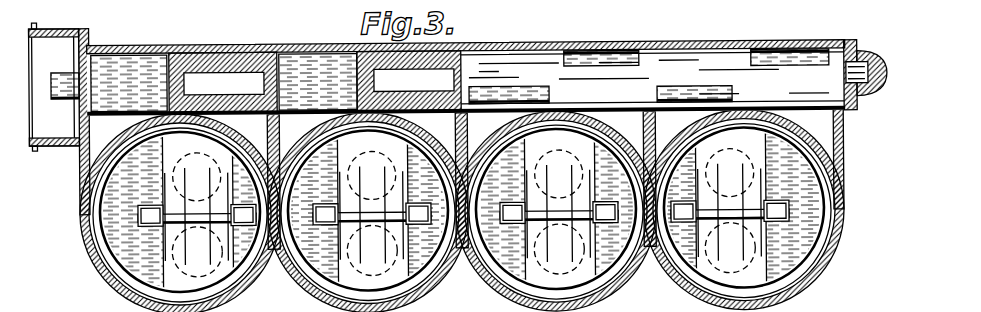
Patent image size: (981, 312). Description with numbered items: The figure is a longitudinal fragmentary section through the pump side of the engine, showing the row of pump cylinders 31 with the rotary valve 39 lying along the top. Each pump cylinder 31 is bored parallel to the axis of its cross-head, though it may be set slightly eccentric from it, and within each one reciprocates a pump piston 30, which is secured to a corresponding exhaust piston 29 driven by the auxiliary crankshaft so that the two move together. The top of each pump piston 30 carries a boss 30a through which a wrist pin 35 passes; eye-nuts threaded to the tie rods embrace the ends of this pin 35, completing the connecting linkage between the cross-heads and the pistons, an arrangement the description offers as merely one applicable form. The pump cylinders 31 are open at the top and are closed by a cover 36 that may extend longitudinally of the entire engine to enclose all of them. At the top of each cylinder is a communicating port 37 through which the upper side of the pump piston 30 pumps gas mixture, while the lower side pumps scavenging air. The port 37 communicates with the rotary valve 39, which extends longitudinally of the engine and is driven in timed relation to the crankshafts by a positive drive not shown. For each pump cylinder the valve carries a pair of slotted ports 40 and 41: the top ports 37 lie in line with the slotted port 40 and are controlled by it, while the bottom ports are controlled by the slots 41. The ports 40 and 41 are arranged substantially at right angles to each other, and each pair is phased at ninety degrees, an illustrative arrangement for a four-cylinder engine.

The exhaust piston 29 is at (400, 265).
The pump piston 30 is at (461, 210).
The boss 30a is at (345, 232).
The pump cylinder 31 is at (823, 273).
The wrist pin 35 is at (560, 222).
The cover 36 is at (463, 180).
The communicating port 37 is at (462, 137).
The rotary valve 39 is at (497, 64).
The slotted port 40 is at (130, 73).
The slotted port 41 is at (213, 77).